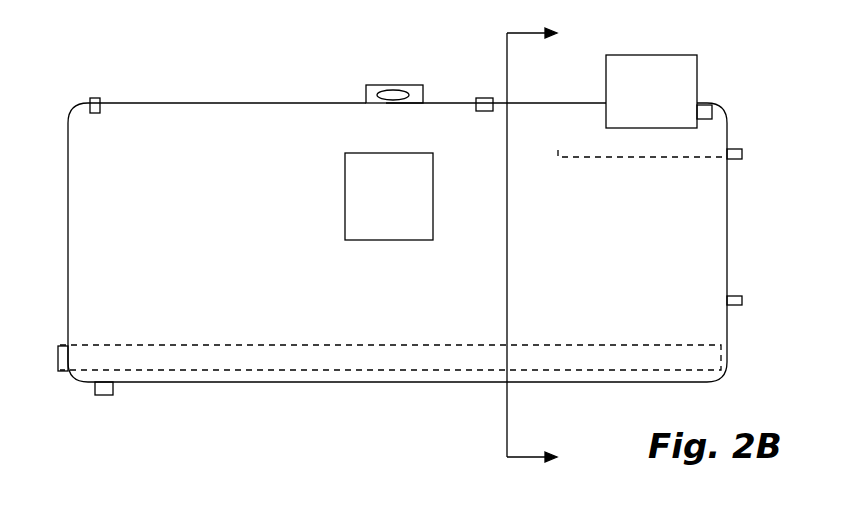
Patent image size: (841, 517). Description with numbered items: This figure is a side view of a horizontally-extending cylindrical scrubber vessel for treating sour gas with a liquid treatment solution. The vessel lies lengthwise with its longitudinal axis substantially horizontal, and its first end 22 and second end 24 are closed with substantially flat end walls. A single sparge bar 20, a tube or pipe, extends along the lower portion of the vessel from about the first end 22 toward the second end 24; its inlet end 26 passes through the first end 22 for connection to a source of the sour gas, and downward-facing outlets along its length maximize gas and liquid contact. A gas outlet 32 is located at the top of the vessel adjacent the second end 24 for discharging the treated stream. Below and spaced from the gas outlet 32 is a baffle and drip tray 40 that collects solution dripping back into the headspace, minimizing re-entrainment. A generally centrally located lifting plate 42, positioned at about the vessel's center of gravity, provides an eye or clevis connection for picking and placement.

The sparge bar 20 is at (253, 345).
The first end 22 is at (68, 170).
The second end 24 is at (727, 274).
The inlet end 26 is at (62, 355).
The gas outlet 32 is at (697, 87).
The baffle and drip tray 40 is at (680, 158).
The lifting plate 42 is at (365, 100).